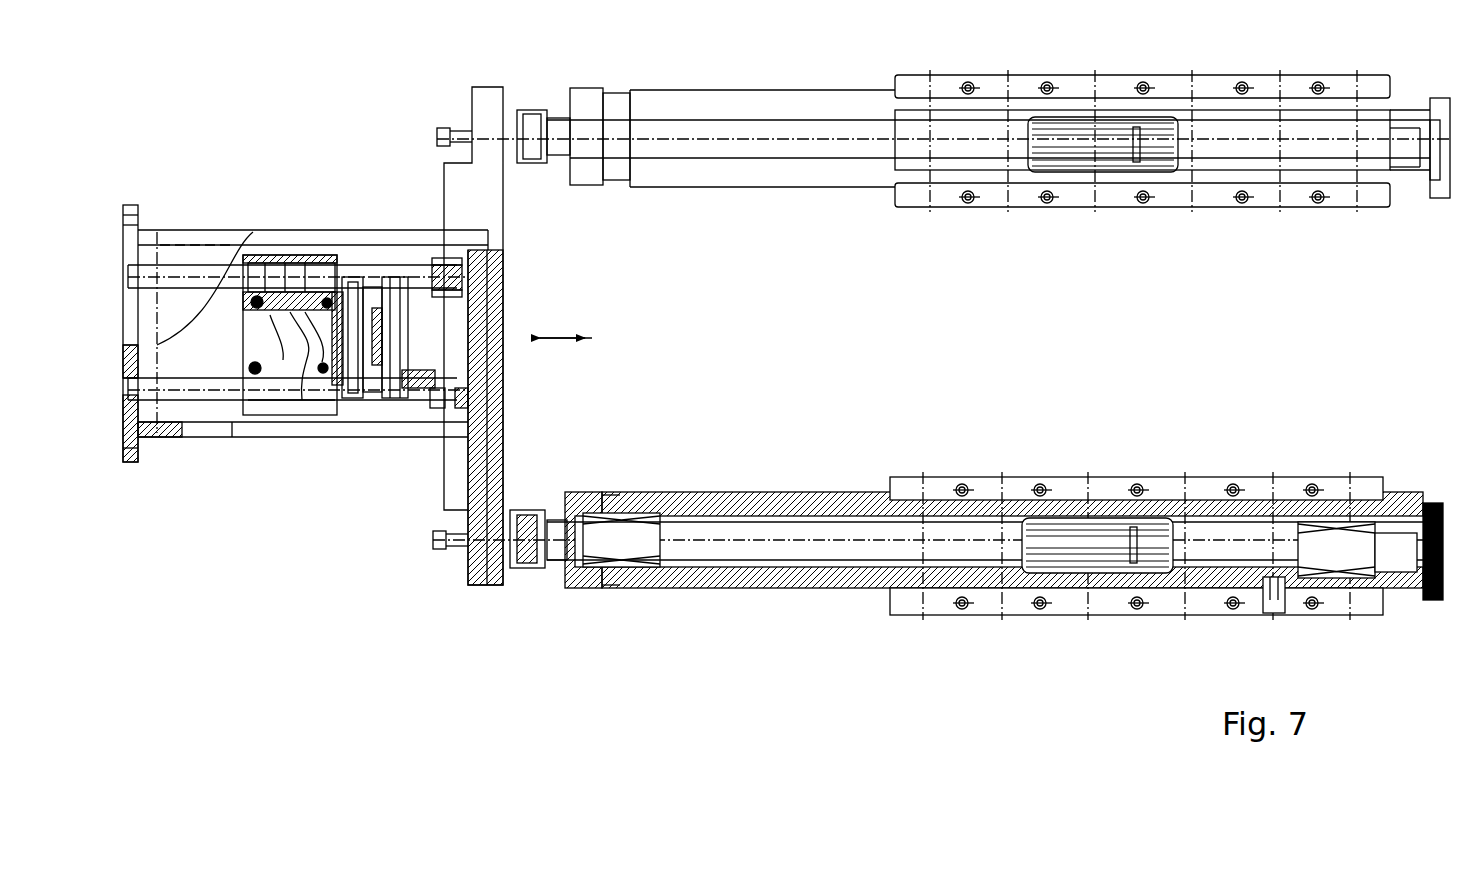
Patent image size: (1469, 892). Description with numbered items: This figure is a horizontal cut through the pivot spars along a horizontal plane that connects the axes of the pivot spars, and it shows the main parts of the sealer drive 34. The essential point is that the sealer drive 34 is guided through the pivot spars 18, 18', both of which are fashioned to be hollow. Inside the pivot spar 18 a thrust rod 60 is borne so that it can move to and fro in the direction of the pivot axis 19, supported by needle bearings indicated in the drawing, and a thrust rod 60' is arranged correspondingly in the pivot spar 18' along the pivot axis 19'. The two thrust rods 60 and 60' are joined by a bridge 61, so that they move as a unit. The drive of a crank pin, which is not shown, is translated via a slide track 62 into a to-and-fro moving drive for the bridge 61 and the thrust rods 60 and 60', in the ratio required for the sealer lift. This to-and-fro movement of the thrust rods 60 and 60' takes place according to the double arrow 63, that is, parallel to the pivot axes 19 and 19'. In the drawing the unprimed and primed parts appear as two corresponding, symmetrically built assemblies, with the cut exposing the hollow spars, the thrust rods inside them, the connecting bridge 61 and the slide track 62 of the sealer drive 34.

The sealer drive 34 is at (353, 108).
The pivot spar 18' is at (943, 110).
The pivot axis 19' is at (988, 88).
The thrust rod 60' is at (1016, 90).
The pivot spar 18 is at (938, 575).
The pivot axis 19 is at (985, 600).
The thrust rod 60 is at (1001, 598).
The bridge 61 is at (468, 470).
The slide track 62 is at (280, 367).
The double arrow 63 is at (565, 338).